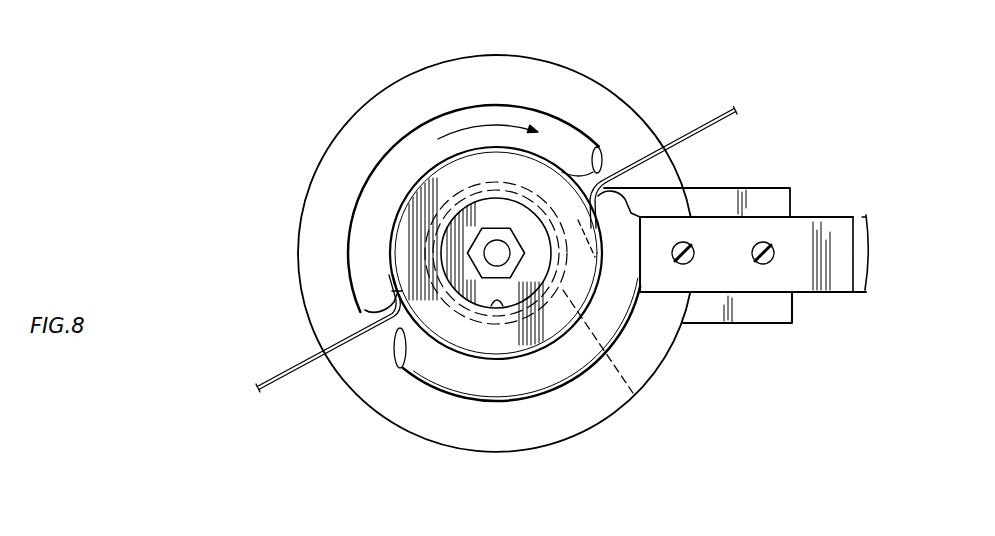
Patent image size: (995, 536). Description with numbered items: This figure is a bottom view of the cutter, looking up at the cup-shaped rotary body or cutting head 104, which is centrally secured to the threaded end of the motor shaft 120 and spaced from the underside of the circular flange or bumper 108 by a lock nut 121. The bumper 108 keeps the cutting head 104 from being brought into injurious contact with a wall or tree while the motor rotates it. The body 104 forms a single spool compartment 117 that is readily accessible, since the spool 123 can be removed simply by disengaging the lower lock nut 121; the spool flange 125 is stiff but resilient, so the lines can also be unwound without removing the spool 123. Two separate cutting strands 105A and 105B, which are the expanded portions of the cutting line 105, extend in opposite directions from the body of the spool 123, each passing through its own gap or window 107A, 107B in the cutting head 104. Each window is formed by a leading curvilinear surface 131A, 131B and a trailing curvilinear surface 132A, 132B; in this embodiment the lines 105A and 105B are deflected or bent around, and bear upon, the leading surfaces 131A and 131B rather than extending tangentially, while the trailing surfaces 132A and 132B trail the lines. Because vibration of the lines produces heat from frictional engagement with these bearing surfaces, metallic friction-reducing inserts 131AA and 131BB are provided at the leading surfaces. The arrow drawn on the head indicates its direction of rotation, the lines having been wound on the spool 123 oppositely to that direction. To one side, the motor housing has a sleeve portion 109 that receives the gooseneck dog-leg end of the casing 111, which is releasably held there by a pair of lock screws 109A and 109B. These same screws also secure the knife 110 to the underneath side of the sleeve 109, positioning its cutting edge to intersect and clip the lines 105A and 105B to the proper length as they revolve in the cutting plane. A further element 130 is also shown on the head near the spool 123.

The cutting head 104 is at (570, 120).
The cutting line 105 is at (638, 399).
The cutting strand 105A is at (739, 113).
The cutting strand 105B is at (257, 386).
The aperture 107A is at (640, 140).
The aperture 107B is at (383, 337).
The bumper 108 is at (542, 57).
The sleeve portion 109 is at (757, 324).
The lock screw 109A is at (686, 264).
The lock screw 109B is at (770, 263).
The knife 110 is at (843, 293).
The casing 111 is at (866, 217).
The spool compartment 117 is at (412, 197).
The motor shaft 120 is at (498, 240).
The lock nut 121 is at (513, 268).
The spool 123 is at (573, 267).
The flange 125 is at (519, 332).
The key 130 is at (497, 305).
The leading curvilinear surface 131A is at (638, 187).
The metallic insert 131AA is at (610, 196).
The leading curvilinear surface 131B is at (350, 312).
The metallic insert 131BB is at (383, 303).
The trailing surface 132A is at (606, 165).
The trailing surface 132B is at (405, 370).